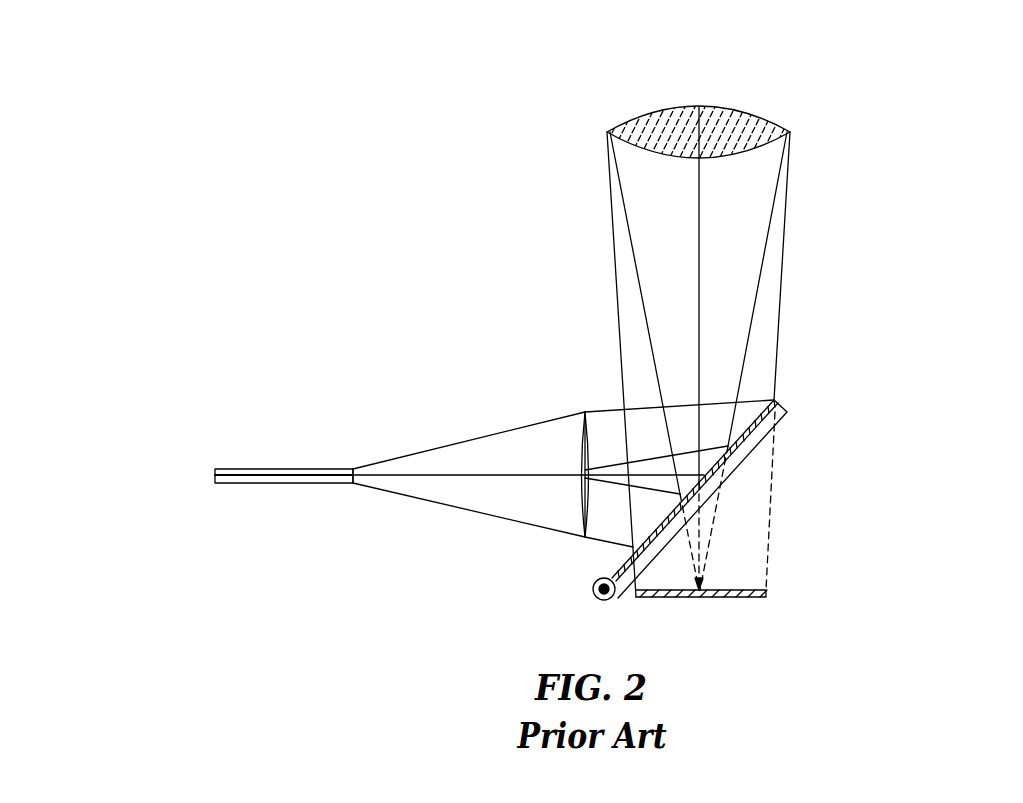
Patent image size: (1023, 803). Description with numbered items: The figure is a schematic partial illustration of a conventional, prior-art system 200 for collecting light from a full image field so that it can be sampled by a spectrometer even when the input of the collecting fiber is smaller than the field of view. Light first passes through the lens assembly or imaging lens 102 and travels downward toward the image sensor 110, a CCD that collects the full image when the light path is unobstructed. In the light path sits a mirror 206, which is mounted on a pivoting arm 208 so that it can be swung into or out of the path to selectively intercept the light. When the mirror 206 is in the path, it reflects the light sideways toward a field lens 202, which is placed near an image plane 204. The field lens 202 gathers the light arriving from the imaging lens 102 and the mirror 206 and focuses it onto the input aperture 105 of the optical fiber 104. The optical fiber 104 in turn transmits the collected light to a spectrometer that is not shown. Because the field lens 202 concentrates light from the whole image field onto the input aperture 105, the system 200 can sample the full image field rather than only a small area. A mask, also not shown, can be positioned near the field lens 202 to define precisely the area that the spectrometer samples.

The conventional system 200 is at (876, 111).
The imaging lens 102 is at (663, 155).
The optical fiber 104 is at (227, 484).
The input aperture 105 is at (353, 470).
The image sensor 110 is at (730, 593).
The field lens 202 is at (578, 440).
The image plane 204 is at (582, 485).
The mirror 206 is at (623, 550).
The pivoting arm 208 is at (627, 565).